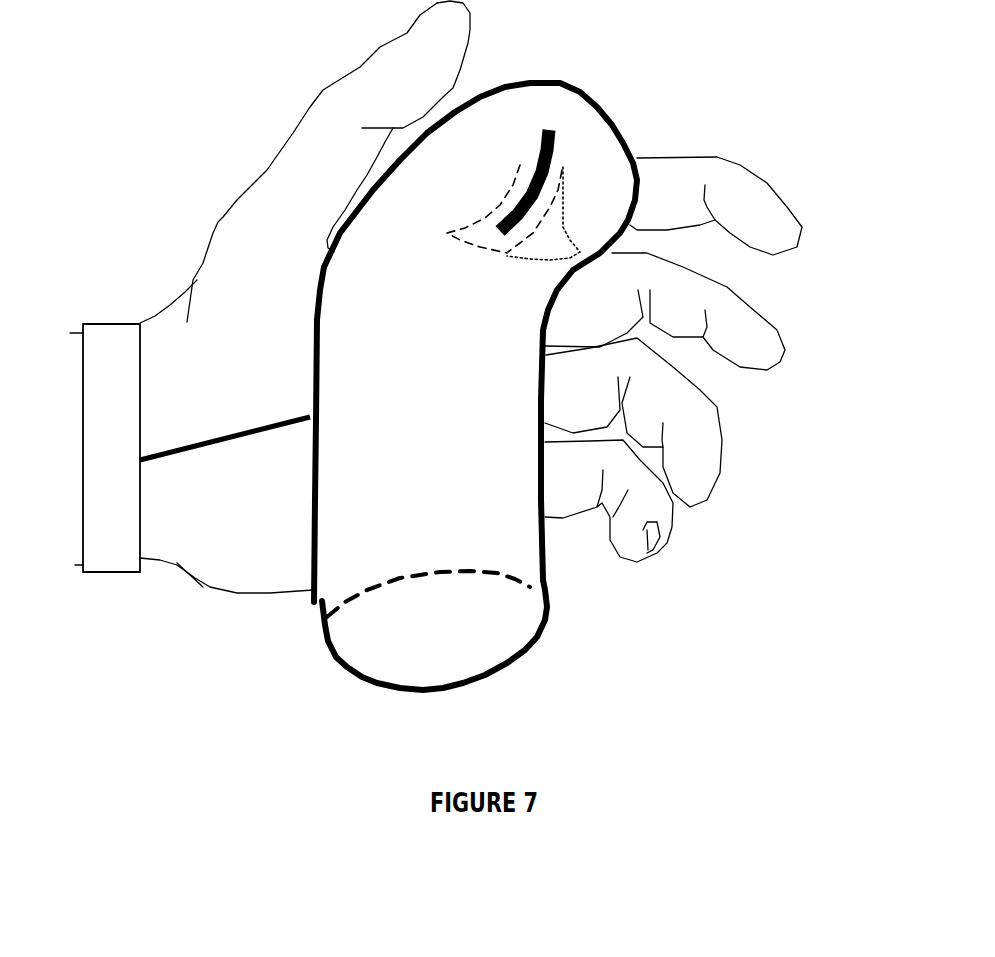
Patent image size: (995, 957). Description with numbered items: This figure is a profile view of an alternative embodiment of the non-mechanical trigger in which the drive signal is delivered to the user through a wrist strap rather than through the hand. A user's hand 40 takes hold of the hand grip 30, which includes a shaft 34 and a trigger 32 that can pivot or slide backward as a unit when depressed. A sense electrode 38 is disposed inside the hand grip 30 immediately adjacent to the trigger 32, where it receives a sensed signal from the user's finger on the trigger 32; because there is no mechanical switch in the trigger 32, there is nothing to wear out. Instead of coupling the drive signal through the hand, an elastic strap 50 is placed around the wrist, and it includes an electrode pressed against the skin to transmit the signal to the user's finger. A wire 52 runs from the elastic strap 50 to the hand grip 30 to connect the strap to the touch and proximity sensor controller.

The hand grip 30 is at (383, 230).
The trigger 32 is at (563, 230).
The shaft 34 is at (313, 352).
The sense electrode 38 is at (562, 137).
The user's hand 40 is at (740, 357).
The elastic strap 50 is at (113, 573).
The wire 52 is at (198, 452).